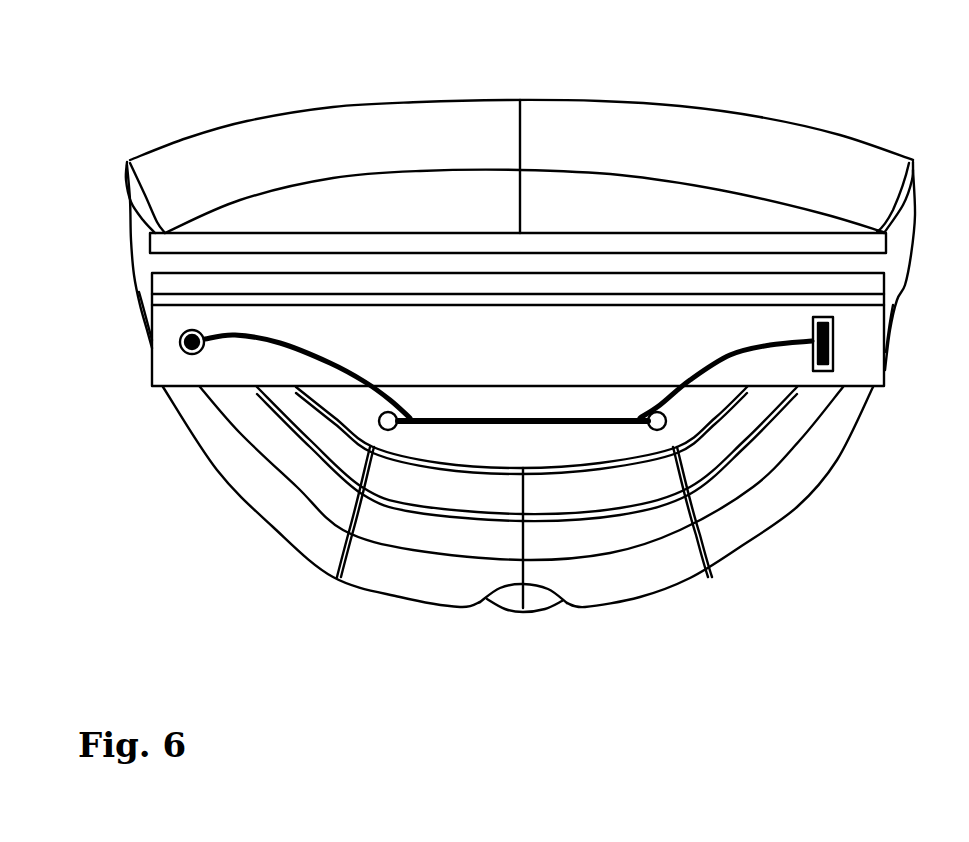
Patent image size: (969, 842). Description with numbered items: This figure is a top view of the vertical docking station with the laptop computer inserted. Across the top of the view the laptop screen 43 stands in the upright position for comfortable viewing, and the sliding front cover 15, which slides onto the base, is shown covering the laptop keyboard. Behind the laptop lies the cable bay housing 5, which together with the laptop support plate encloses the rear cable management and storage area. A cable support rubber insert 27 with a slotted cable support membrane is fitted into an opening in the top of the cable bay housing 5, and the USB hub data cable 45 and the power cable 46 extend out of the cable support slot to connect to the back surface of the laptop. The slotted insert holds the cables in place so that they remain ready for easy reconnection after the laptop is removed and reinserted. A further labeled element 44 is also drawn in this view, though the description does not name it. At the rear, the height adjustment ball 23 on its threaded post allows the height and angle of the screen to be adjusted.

The cable bay housing 5 is at (378, 522).
The sliding front cover 15 is at (265, 163).
The height adjustment ball 23 is at (522, 602).
The cable support rubber insert 27 is at (550, 447).
The laptop screen 43 is at (218, 258).
The front pad 44 is at (433, 345).
The USB hub data cable 45 is at (700, 372).
The power cable 46 is at (282, 343).